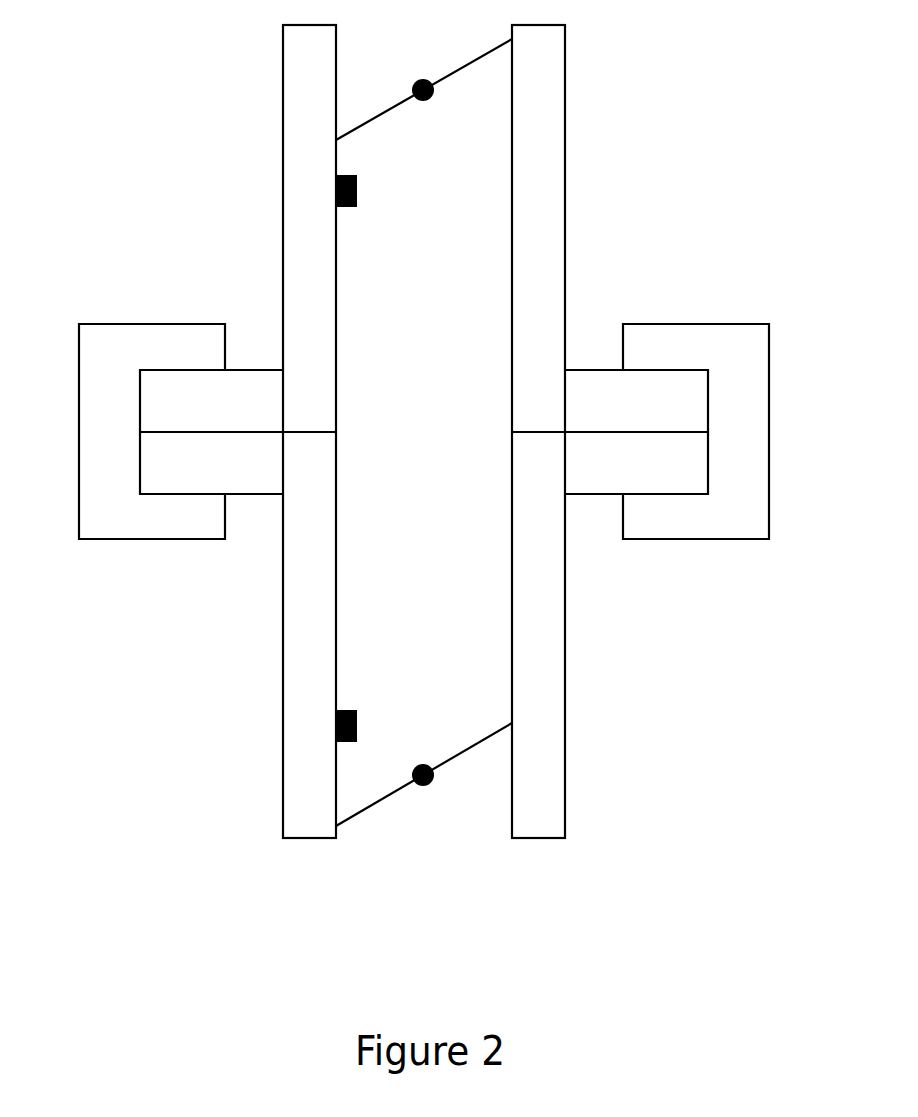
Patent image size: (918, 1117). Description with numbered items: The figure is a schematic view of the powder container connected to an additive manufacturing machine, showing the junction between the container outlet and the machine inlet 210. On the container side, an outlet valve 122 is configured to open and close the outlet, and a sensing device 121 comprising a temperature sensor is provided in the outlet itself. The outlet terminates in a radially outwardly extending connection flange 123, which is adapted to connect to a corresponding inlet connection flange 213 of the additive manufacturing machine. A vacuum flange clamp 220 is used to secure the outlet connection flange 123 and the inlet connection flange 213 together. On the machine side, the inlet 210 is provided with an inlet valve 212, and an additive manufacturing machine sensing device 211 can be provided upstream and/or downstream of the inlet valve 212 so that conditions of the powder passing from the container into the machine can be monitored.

The sensing device 121 is at (336, 190).
The outlet valve 122 is at (468, 63).
The connection flange 123 is at (687, 380).
The inlet 210 is at (296, 680).
The additive manufacturing machine sensing device 211 is at (340, 742).
The inlet valve 212 is at (463, 755).
The inlet connection flange 213 is at (575, 482).
The vacuum flange clamp 220 is at (107, 532).